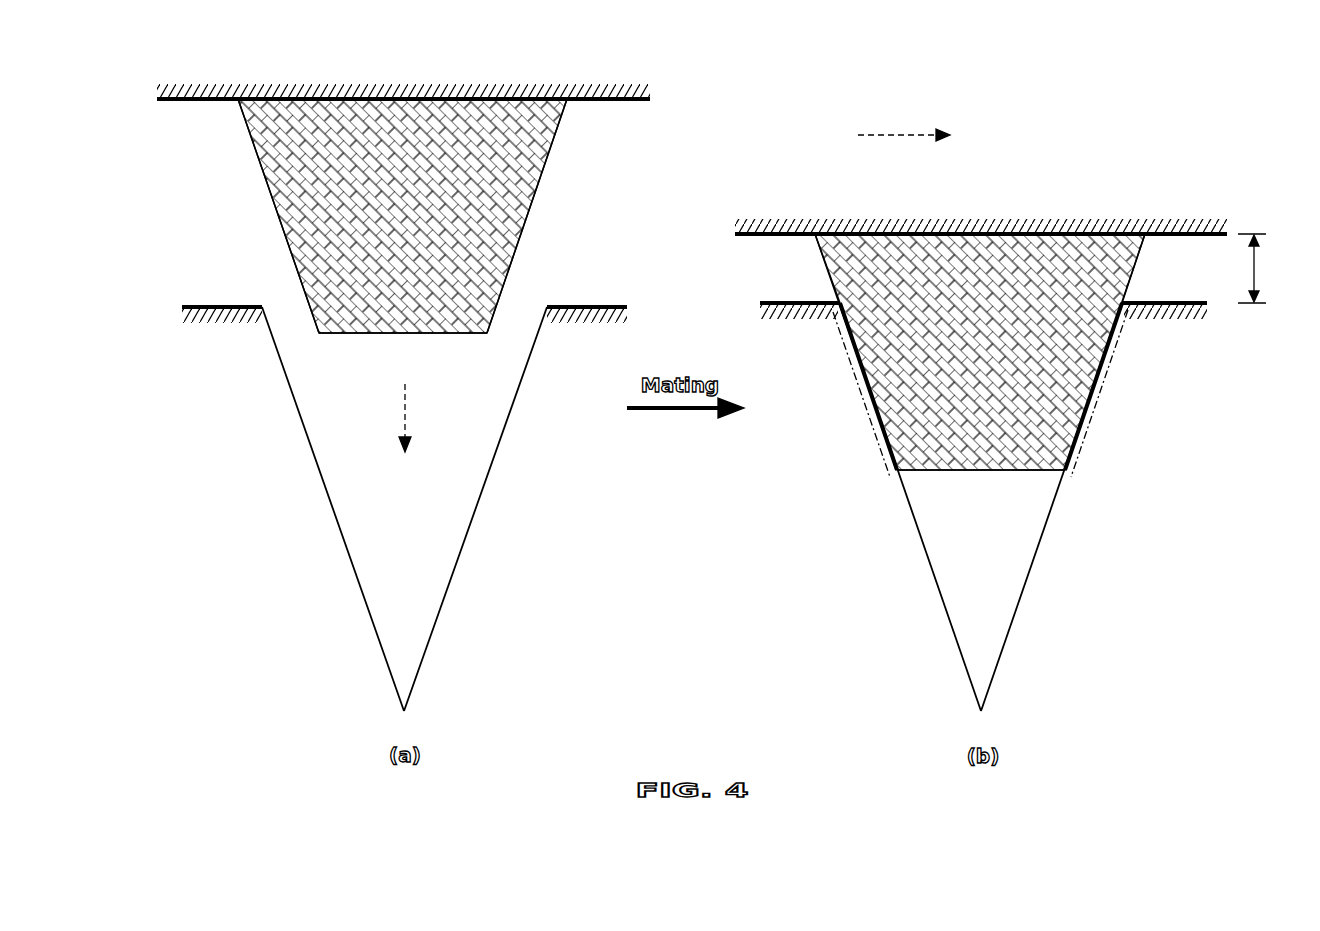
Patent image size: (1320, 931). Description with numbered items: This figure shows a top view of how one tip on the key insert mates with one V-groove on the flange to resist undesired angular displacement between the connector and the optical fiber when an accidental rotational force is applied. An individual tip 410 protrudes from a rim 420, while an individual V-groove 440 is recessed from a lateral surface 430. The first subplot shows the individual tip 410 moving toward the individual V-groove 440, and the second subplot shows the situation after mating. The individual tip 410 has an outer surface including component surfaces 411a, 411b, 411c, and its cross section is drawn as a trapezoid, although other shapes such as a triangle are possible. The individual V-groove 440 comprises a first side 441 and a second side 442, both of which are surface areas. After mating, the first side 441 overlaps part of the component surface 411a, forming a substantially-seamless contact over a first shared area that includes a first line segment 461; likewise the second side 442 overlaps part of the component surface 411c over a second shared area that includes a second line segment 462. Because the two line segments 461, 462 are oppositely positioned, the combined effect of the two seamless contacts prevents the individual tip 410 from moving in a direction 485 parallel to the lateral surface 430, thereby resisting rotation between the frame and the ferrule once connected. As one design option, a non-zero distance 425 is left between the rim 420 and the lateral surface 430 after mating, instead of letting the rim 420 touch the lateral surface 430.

The individual tip 410 is at (693, 314).
The component surface 411a is at (259, 160).
The component surface 411b is at (355, 334).
The component surface 411c is at (533, 205).
The rim 420 is at (613, 101).
The non-zero distance 425 is at (1254, 268).
The lateral surface 430 is at (603, 305).
The individual V-groove 440 is at (676, 507).
The first side 441 is at (310, 445).
The second side 442 is at (469, 530).
The first line segment 461 is at (866, 414).
The second line segment 462 is at (1104, 393).
The direction 485 is at (898, 133).